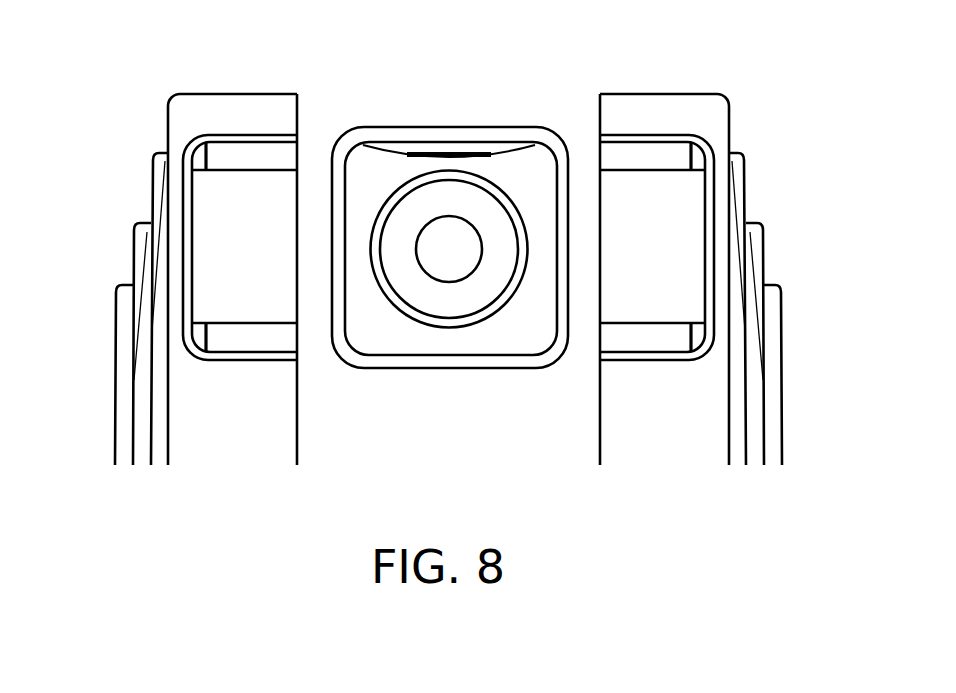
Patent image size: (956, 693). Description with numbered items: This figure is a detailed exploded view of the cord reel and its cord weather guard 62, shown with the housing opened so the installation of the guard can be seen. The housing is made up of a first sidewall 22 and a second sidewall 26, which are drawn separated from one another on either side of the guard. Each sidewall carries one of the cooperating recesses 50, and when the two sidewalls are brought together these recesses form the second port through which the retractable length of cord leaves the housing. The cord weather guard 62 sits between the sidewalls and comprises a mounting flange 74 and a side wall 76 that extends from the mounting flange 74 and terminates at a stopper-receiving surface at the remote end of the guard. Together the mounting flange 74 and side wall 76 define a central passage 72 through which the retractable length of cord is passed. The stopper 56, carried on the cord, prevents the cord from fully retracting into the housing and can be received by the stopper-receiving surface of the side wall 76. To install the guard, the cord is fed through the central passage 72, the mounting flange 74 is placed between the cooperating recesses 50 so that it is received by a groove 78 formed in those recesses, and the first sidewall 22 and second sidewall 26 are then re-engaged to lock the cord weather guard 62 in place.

The first sidewall 22 is at (240, 115).
The second sidewall 26 is at (651, 103).
The groove 78 is at (299, 130).
The cooperating recesses 50 is at (240, 225).
The mounting flange 74 is at (503, 133).
The cord weather guard 62 is at (538, 163).
The side wall 76 is at (517, 328).
The stopper 56 is at (436, 292).
The central passage 72 is at (442, 228).